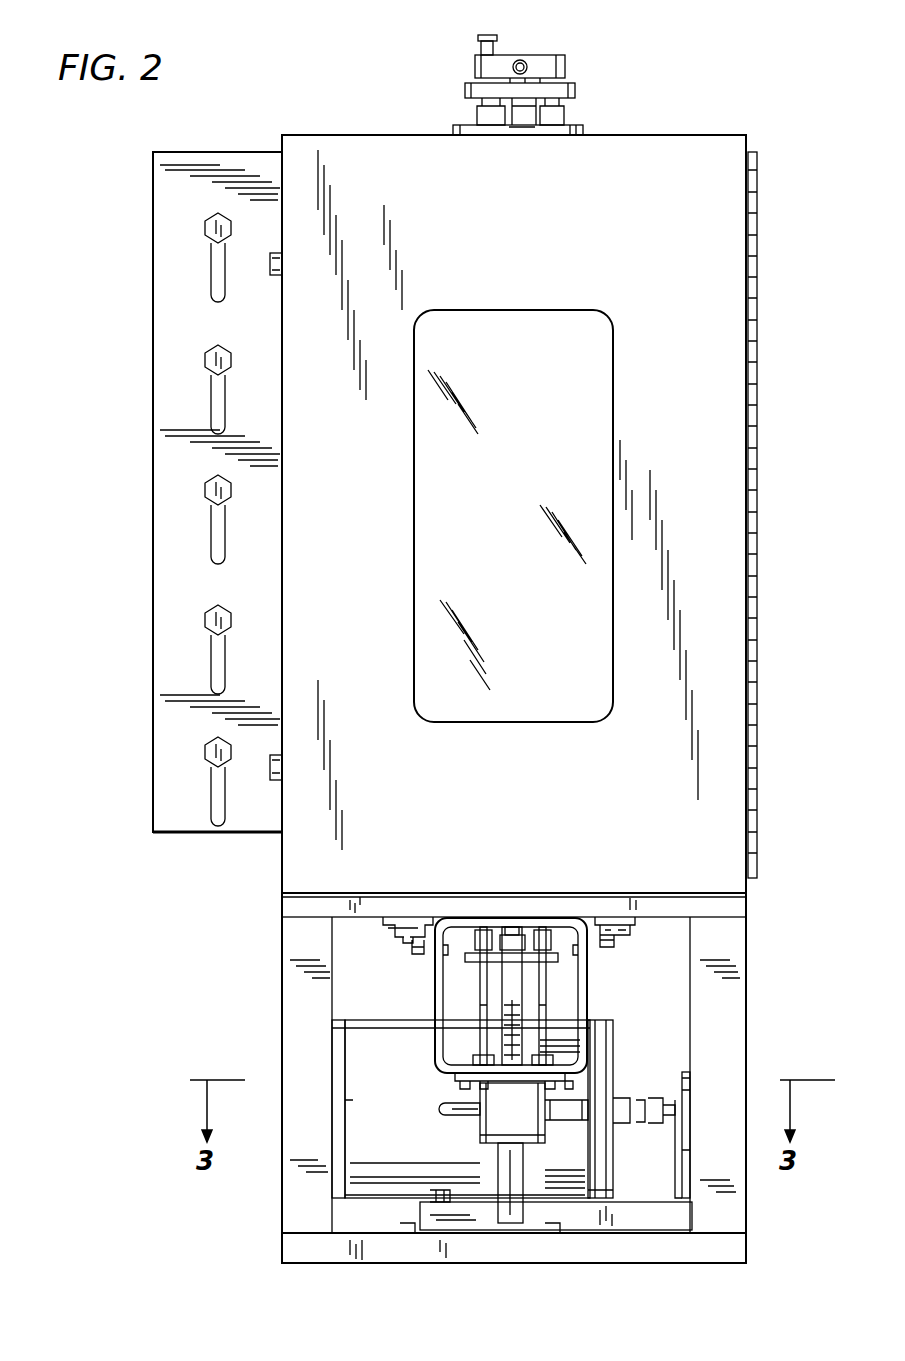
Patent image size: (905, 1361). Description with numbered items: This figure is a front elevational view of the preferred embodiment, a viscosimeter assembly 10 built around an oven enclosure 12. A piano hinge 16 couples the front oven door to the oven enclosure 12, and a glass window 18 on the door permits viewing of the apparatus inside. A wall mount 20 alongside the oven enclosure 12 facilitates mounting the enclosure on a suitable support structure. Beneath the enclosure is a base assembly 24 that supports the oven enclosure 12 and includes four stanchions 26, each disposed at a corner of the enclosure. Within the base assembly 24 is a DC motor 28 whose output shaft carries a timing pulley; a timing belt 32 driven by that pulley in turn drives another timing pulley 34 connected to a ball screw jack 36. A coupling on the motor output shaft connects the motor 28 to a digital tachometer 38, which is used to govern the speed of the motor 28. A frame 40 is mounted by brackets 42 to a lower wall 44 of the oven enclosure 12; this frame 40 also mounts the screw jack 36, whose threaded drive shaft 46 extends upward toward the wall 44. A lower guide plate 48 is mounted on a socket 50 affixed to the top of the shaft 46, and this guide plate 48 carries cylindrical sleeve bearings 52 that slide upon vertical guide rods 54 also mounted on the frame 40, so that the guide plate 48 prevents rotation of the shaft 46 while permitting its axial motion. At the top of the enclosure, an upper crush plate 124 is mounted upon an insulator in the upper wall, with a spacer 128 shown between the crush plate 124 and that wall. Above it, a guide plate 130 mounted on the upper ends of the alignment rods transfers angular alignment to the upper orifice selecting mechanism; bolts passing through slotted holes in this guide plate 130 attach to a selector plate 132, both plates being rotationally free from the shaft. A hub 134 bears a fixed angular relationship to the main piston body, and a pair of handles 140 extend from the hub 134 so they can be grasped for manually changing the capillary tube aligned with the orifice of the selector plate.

The viscosimeter assembly 10 is at (784, 583).
The oven enclosure 12 is at (282, 878).
The piano hinge 16 is at (750, 662).
The glass window 18 is at (595, 372).
The wall mount 20 is at (165, 295).
The base assembly 24 is at (258, 1227).
The stanchions 26 is at (283, 1043).
The DC motor 28 is at (388, 1175).
The timing belt 32 is at (602, 1133).
The timing pulley 34 is at (612, 1180).
The ball screw jack 36 is at (480, 1122).
The digital tachometer 38 is at (692, 1074).
The frame 40 is at (426, 1064).
The brackets 42 is at (406, 945).
The lower wall 44 is at (562, 905).
The threaded drive shaft 46 is at (515, 1012).
The lower guide plate 48 is at (467, 958).
The socket 50 is at (510, 930).
The cylindrical sleeve bearings 52 is at (478, 964).
The vertical guide rods 54 is at (480, 1012).
The upper crush plate 124 is at (458, 128).
The spacer 128 is at (583, 130).
The guide plate 130 is at (465, 90).
The selector plate 132 is at (575, 88).
The hub 134 is at (565, 62).
The handles 140 is at (524, 64).